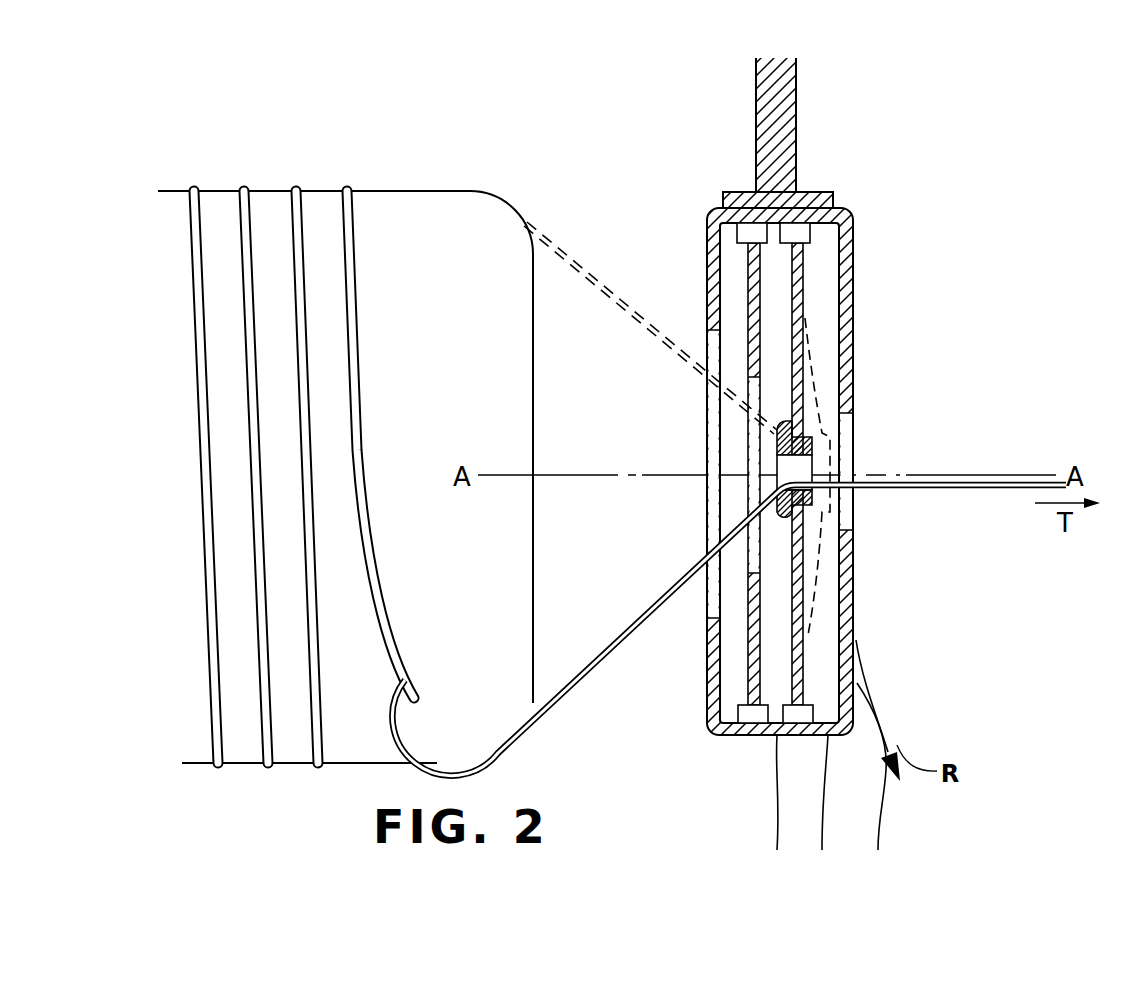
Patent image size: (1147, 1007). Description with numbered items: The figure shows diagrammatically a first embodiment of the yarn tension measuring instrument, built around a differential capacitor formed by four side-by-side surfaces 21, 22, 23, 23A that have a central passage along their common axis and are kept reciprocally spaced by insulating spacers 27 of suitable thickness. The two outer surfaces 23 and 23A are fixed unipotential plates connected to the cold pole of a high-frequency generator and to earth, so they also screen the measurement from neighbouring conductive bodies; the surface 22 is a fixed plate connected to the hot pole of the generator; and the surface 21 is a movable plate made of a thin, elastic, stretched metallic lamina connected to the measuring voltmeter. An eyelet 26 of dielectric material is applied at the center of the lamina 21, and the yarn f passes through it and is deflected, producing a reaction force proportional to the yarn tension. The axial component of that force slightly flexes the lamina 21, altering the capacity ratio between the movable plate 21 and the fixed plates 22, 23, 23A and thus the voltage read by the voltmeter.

The movable plate 21 is at (801, 266).
The fixed plate 22 is at (750, 266).
The fixed unipotential plate 23 is at (853, 642).
The fixed unipotential plate 23A is at (707, 675).
The eyelet 26 is at (815, 443).
The insulating spacers 27 is at (740, 233).
The yarn f is at (618, 643).